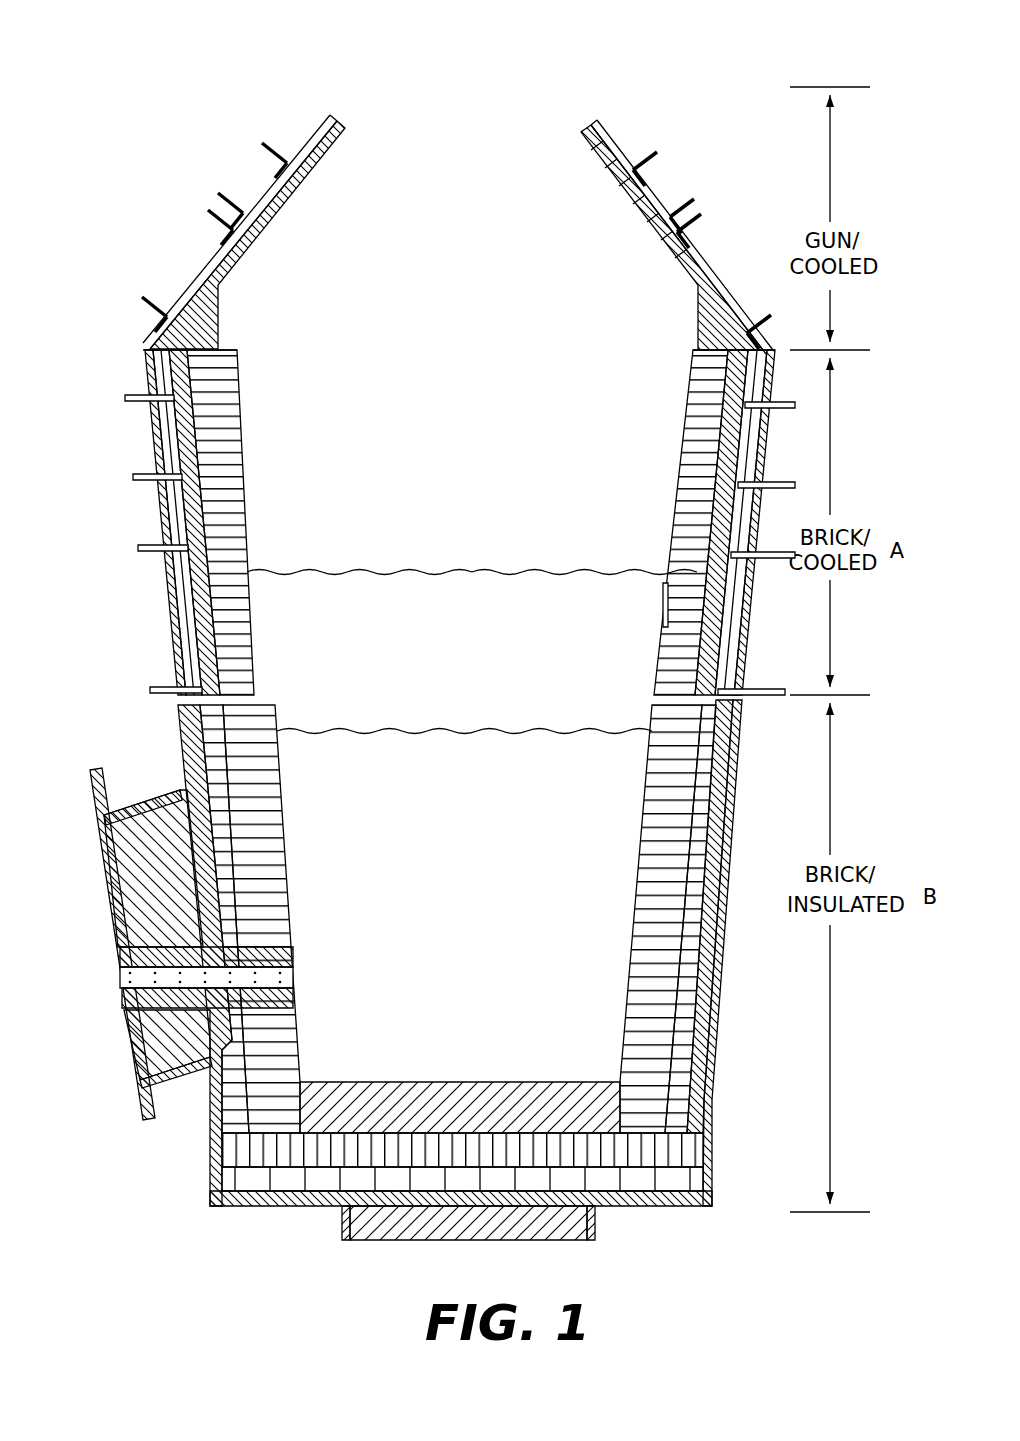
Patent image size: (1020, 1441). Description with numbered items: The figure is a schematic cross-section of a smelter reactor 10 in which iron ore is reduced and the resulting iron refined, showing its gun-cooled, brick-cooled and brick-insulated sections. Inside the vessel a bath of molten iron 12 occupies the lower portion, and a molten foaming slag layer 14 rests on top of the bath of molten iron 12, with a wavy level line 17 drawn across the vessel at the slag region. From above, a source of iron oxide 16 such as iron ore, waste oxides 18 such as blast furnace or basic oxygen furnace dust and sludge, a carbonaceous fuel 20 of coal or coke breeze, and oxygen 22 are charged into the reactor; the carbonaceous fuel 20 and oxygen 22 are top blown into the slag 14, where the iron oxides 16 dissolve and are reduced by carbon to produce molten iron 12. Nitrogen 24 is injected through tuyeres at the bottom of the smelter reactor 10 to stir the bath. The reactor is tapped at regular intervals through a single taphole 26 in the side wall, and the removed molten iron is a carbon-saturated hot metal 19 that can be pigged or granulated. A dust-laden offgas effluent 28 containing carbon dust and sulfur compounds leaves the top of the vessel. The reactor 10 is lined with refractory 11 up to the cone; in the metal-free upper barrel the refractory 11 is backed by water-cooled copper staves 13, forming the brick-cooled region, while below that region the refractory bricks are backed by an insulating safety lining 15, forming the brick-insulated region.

The smelter reactor 10 is at (254, 1216).
The refractory 11 is at (678, 976).
The bath of molten iron 12 is at (482, 811).
The water-cooled copper staves 13 is at (745, 620).
The molten slag layer 14 is at (612, 583).
The insulating safety lining 15 is at (705, 1052).
The iron oxide 16 is at (528, 168).
The molten bath level 17 is at (262, 578).
The waste oxides 18 is at (365, 142).
The hot metal 19 is at (128, 985).
The carbonaceous fuel 20 is at (420, 170).
The oxygen 22 is at (480, 140).
The nitrogen 24 is at (580, 1064).
The taphole 26 is at (110, 972).
The offgas effluent 28 is at (565, 205).